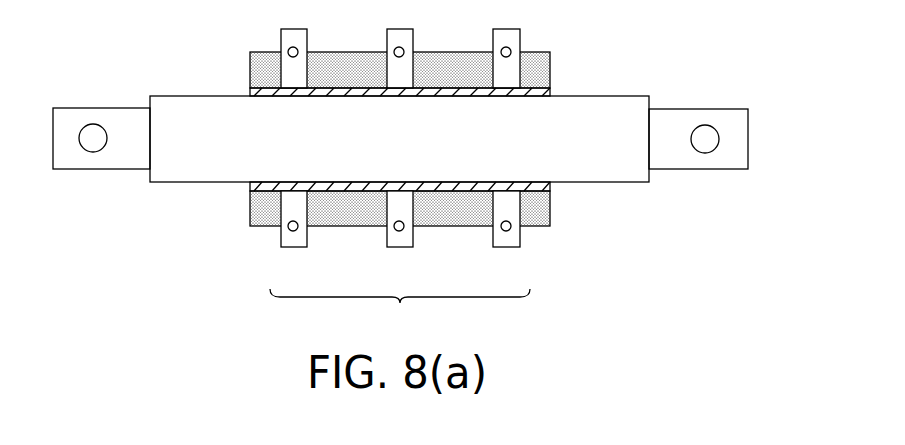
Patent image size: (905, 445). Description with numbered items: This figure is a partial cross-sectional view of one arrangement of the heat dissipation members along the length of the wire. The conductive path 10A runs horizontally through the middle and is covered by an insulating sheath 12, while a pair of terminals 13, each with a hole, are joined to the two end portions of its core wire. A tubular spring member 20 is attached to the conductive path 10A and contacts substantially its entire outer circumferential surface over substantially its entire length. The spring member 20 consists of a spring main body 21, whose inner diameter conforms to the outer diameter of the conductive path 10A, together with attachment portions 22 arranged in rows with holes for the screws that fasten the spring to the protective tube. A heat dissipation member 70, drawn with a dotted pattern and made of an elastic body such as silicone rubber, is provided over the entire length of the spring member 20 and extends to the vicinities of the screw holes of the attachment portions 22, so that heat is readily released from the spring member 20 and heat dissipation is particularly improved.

The conductive path 10A is at (612, 80).
The insulating sheath 12 is at (188, 103).
The terminal 13 is at (93, 170).
The spring member 20 is at (400, 315).
The spring main body 21 is at (343, 186).
The attachment portion 22 is at (293, 248).
The heat dissipation member 70 is at (453, 52).